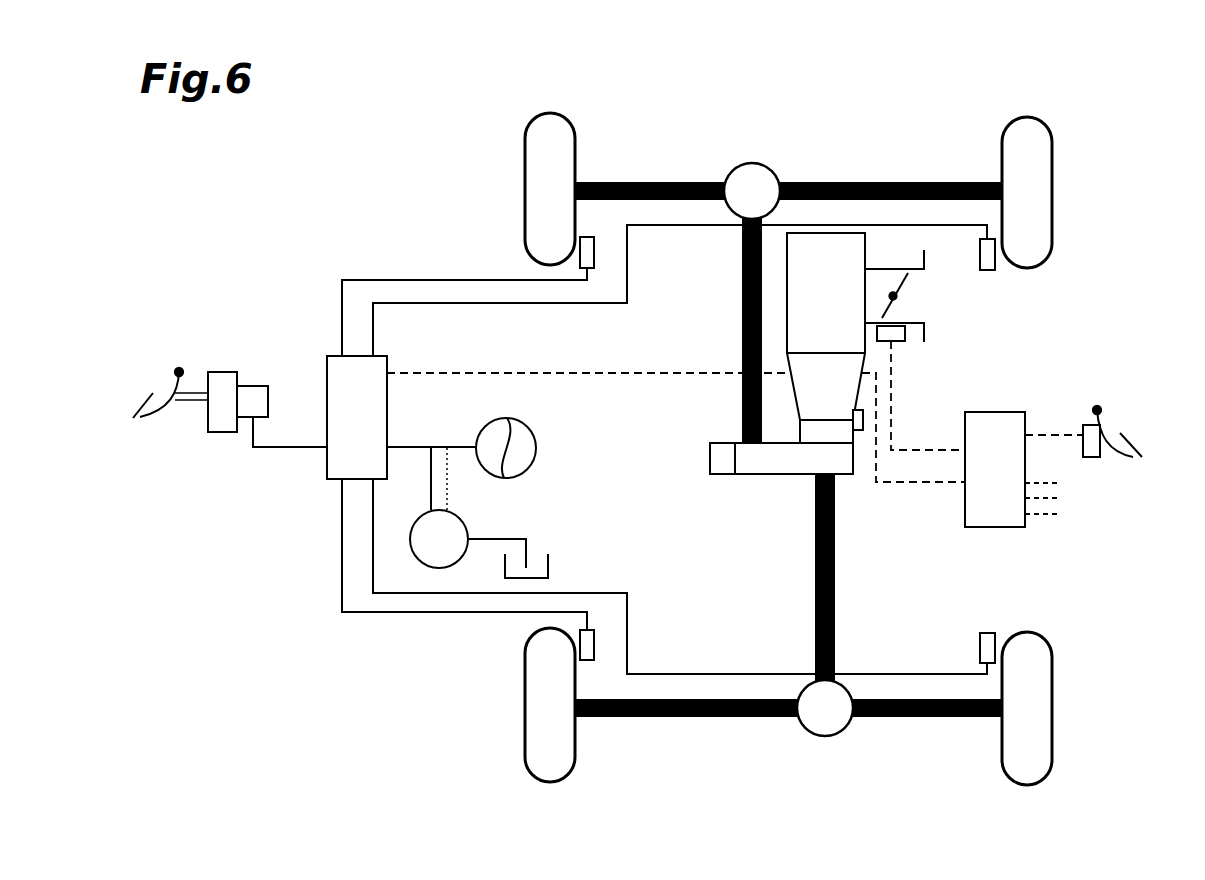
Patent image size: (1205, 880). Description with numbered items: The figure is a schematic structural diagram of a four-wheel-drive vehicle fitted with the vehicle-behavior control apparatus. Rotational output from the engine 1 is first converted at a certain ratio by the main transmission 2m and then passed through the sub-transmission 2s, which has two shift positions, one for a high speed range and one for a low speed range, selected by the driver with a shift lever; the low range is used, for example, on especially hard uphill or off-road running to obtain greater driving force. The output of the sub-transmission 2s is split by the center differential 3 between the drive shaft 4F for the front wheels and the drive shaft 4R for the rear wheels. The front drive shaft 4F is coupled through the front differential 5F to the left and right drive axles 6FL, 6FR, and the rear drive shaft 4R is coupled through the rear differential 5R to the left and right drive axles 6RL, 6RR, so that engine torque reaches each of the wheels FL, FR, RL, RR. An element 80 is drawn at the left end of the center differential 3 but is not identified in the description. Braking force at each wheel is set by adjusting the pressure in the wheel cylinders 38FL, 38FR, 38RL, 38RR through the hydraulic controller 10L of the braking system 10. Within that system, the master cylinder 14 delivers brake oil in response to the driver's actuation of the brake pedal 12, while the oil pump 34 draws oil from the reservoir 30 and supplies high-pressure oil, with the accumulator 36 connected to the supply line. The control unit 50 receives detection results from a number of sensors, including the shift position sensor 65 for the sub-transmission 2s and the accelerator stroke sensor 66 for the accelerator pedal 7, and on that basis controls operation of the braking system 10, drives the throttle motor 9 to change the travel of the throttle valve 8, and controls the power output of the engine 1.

The engine 1 is at (787, 271).
The main transmission 2m is at (795, 393).
The sub-transmission 2s is at (800, 435).
The center differential 3 is at (748, 474).
The drive shaft for the front wheels 4F is at (742, 302).
The drive shaft for the rear wheels 4R is at (835, 575).
The front differential 5F is at (750, 163).
The rear differential 5R is at (828, 737).
The front left drive axle 6FL is at (663, 182).
The front right drive axle 6FR is at (879, 182).
The rear left drive axle 6RL is at (681, 718).
The rear right drive axle 6RR is at (931, 719).
The accelerator pedal 7 is at (1132, 444).
The throttle valve 8 is at (905, 286).
The throttle motor 9 is at (910, 342).
The braking system 10 is at (307, 290).
The hydraulic controller 10L is at (386, 356).
The brake pedal 12 is at (157, 420).
The master cylinder 14 is at (227, 372).
The reservoir 30 is at (551, 563).
The oil pump 34 is at (419, 516).
The accumulator 36 is at (536, 433).
The front left wheel cylinder 38FL is at (587, 237).
The front right wheel cylinder 38FR is at (987, 270).
The rear left wheel cylinder 38RL is at (587, 660).
The rear right wheel cylinder 38RR is at (987, 633).
The control unit 50 is at (993, 412).
The shift position sensor 65 is at (863, 425).
The accelerator stroke sensor 66 is at (1077, 424).
The center differential clutch 80 is at (712, 456).
The front left wheel FL is at (552, 113).
The front right wheel FR is at (1027, 117).
The rear left wheel RL is at (548, 782).
The rear right wheel RR is at (1027, 785).